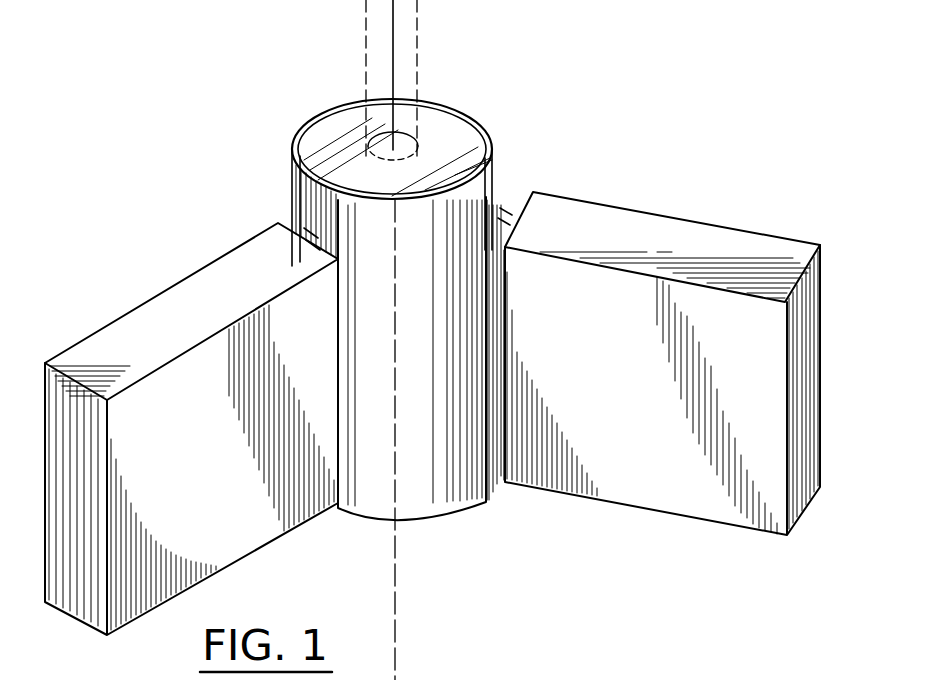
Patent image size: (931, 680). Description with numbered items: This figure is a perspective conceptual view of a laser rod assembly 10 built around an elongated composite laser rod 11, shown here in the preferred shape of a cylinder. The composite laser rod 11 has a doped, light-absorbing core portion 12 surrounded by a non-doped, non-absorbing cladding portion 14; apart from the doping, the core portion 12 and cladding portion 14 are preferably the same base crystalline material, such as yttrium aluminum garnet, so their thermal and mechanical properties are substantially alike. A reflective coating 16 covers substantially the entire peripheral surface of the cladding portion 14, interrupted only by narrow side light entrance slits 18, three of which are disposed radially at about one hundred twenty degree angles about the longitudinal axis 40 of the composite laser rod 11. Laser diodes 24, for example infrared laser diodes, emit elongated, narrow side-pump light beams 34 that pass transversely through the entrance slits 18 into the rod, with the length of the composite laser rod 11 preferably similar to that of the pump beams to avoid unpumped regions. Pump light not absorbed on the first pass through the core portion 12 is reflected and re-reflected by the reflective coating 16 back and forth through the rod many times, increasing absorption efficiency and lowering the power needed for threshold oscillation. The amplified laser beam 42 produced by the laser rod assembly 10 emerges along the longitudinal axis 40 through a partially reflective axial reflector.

The laser rod assembly 10 is at (298, 110).
The composite laser rod 11 is at (294, 138).
The core portion 12 is at (484, 124).
The cladding portion 14 is at (410, 138).
The reflective coating 16 is at (492, 157).
The side light entrance slits 18 is at (377, 100).
The laser diodes 24 is at (185, 281).
The side-pump light beams 34 is at (302, 232).
The longitudinal axis 40 is at (395, 67).
The amplified laser beam 42 is at (419, 35).